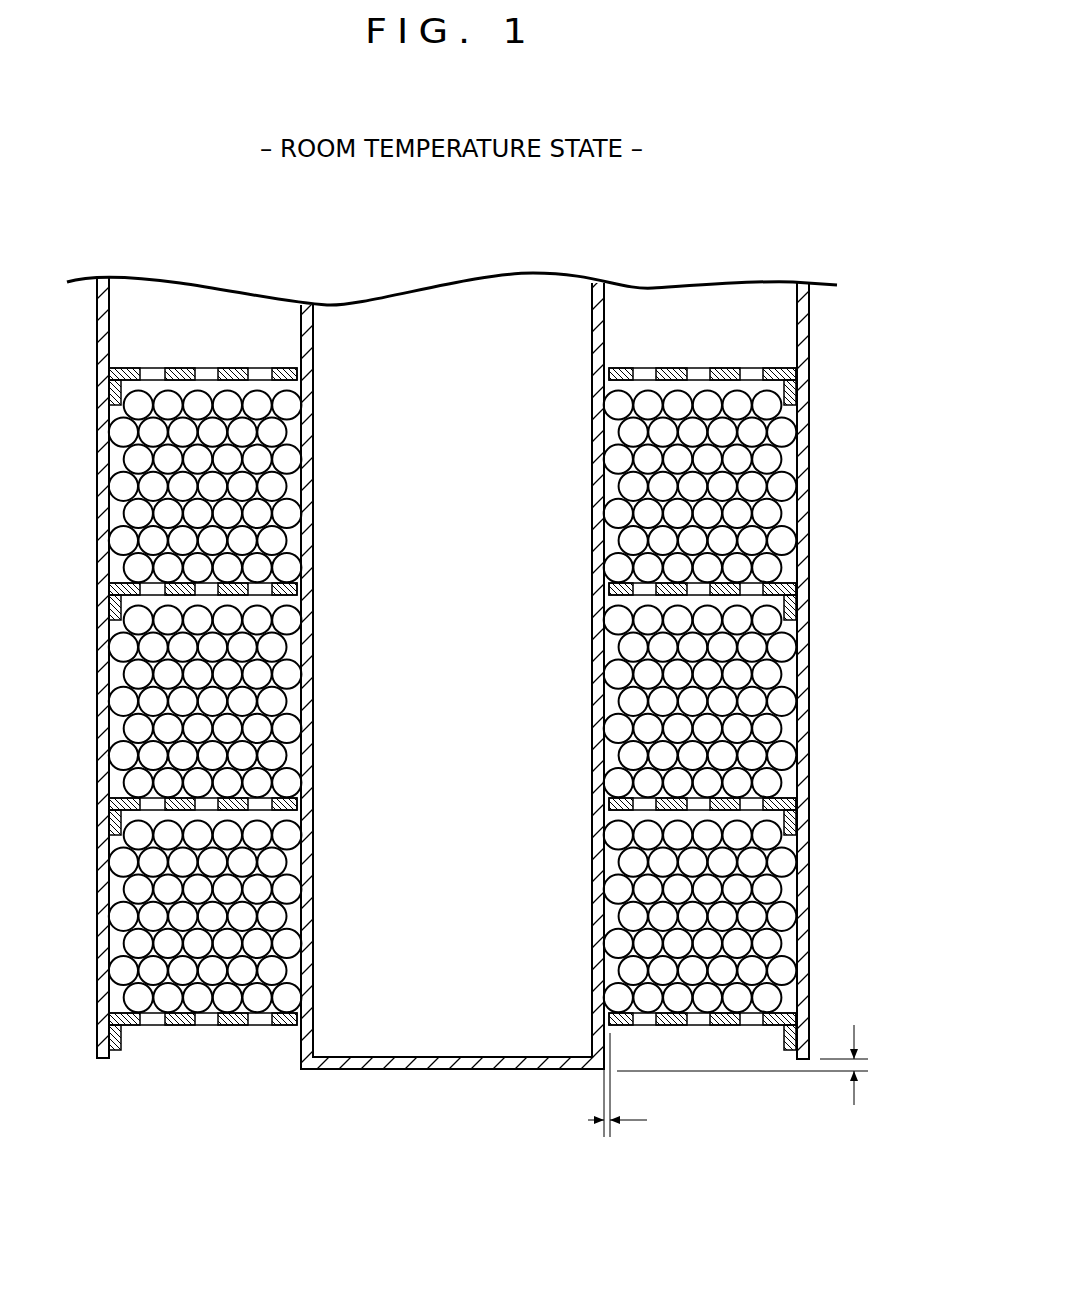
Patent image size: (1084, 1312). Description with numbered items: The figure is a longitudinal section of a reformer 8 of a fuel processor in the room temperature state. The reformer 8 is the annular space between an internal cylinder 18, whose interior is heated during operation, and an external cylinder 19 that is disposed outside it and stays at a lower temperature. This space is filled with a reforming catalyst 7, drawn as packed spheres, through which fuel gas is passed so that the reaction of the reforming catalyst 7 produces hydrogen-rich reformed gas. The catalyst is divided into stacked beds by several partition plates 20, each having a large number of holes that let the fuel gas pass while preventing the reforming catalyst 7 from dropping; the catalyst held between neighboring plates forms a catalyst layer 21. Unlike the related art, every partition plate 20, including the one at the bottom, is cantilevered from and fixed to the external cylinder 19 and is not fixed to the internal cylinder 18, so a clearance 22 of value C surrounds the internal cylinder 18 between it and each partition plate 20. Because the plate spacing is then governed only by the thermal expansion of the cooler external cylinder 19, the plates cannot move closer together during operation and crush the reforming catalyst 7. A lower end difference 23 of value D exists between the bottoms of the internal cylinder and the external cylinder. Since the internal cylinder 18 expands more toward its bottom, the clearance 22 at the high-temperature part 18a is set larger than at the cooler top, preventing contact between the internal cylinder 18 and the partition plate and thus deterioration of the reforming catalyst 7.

The reforming catalyst 7 is at (740, 460).
The reformer 8 is at (183, 367).
The internal cylinder 18 is at (468, 683).
The high-temperature part 18a is at (388, 1063).
The external cylinder 19 is at (802, 543).
The partition plate 20 is at (797, 372).
The catalyst layer 21 is at (767, 387).
The clearance 22 is at (630, 1122).
The lower end difference 23 is at (854, 1095).